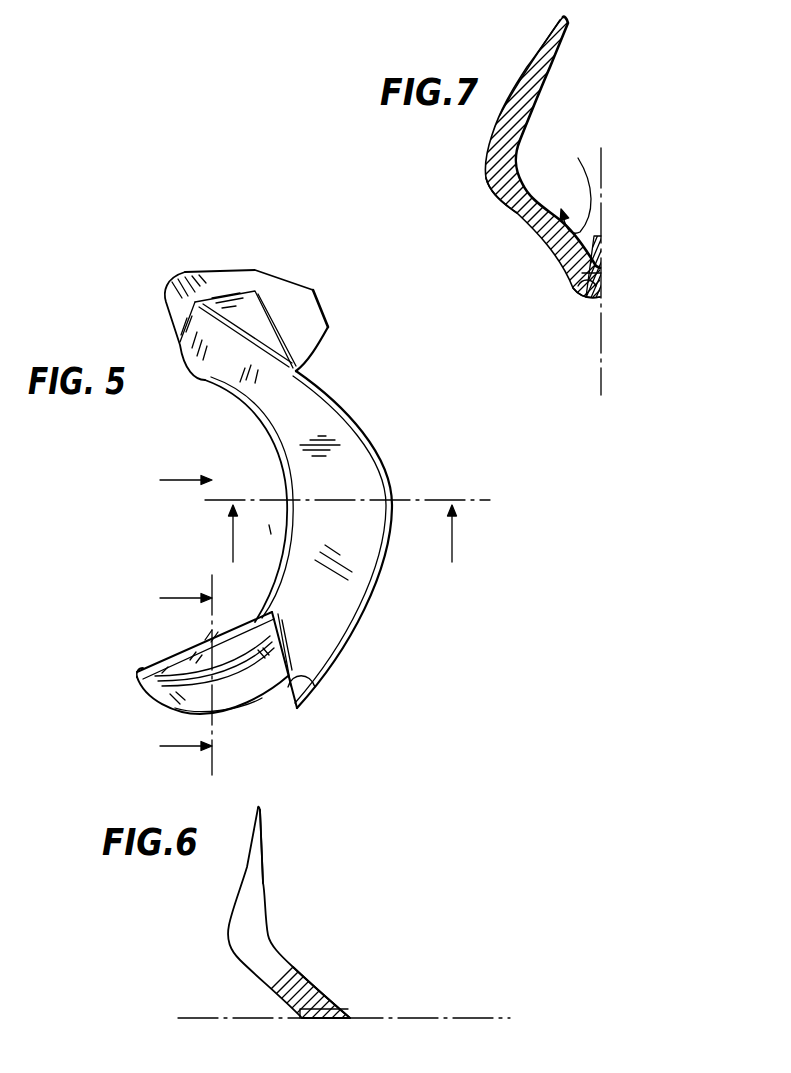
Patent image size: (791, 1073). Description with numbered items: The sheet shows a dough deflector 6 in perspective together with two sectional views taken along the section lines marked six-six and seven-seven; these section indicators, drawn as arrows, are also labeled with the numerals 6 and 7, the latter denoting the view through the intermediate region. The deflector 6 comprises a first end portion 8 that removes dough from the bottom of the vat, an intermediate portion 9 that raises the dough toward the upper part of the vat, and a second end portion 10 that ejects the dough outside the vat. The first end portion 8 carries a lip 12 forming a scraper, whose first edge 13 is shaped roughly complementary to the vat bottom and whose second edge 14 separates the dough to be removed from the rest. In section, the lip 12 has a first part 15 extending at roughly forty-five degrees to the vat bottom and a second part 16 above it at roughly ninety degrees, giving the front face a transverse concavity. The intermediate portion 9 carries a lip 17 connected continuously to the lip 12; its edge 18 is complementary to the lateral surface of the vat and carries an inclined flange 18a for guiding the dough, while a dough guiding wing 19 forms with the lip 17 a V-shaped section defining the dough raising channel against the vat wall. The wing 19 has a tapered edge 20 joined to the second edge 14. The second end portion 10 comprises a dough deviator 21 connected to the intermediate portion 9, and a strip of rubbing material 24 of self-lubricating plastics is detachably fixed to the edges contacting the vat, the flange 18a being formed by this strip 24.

In FIG. 5, the deflector 6 is at (176, 610).
In FIG. 5, the section line 7- 7 is at (343, 533).
In FIG. 5, the first end portion 8 is at (141, 697).
In FIG. 5, the intermediate portion 9 is at (279, 482).
In FIG. 7, the intermediate portion 9 is at (548, 113).
In FIG. 5, the second end portion 10 is at (283, 281).
In FIG. 5, the lip 12 is at (135, 677).
In FIG. 6, the lip 12 is at (226, 955).
In FIG. 5, the first edge 13 is at (232, 708).
In FIG. 5, the second edge 14 is at (241, 628).
In FIG. 6, the first part 15 is at (302, 970).
In FIG. 6, the second part 16 is at (264, 880).
In FIG. 7, the lip 17 is at (516, 233).
In FIG. 7, the edge 18 is at (574, 290).
In FIG. 7, the inclined flange 18a is at (596, 233).
In FIG. 5, the dough guiding wing 19 is at (335, 617).
In FIG. 7, the dough guiding wing 19 is at (526, 66).
In FIG. 5, the tapered edge 20 is at (312, 690).
In FIG. 5, the dough deviator 21 is at (330, 327).
In FIG. 7, the strip of rubbing material 24 is at (602, 270).
In FIG. 6, the strip of rubbing material 24 is at (336, 1005).